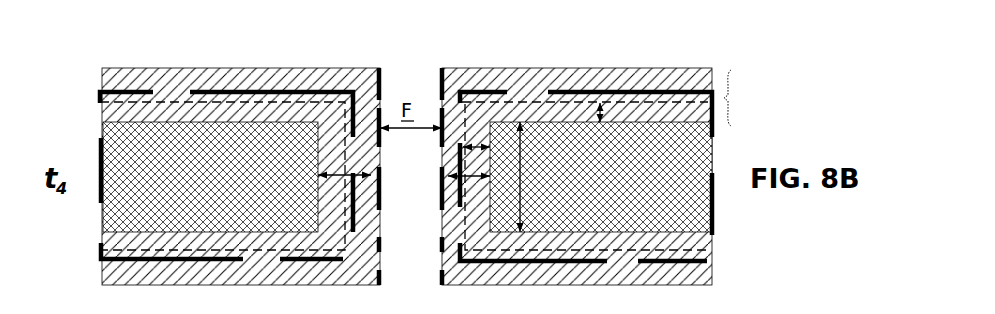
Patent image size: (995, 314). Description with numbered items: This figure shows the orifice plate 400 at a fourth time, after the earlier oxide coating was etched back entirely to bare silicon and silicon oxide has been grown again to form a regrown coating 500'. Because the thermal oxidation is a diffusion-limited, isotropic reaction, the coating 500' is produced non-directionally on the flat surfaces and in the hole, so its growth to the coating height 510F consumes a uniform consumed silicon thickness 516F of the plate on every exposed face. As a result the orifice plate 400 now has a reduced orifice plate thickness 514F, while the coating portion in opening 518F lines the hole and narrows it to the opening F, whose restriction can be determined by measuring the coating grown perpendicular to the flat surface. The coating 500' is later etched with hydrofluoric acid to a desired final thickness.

The orifice plate 400 is at (235, 190).
The coating height 510F is at (177, 122).
The reduced orifice plate thickness 514F is at (523, 181).
The consumed silicon thickness 516F is at (478, 143).
The coating portion in opening 518F is at (638, 92).
The regrown coating 500' is at (757, 98).